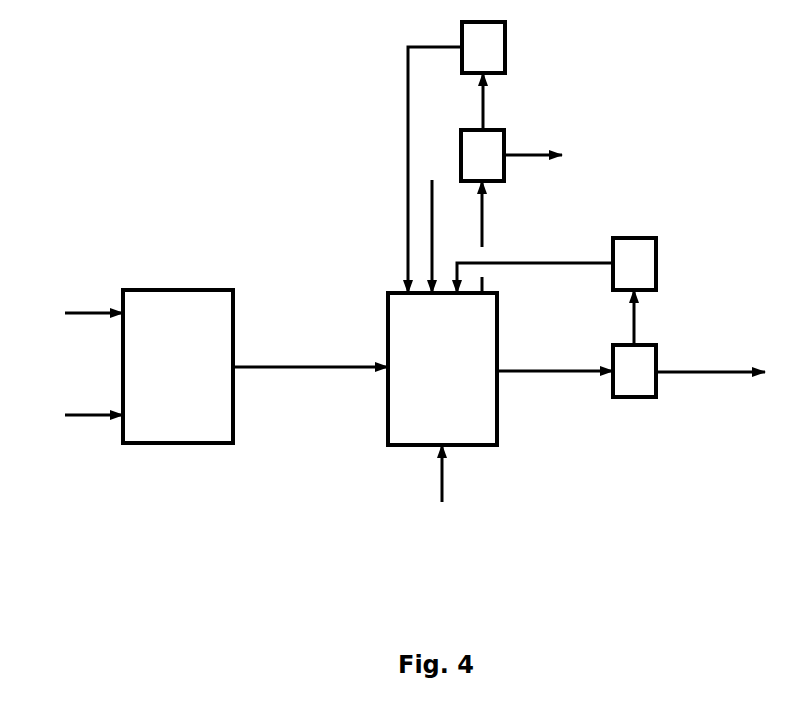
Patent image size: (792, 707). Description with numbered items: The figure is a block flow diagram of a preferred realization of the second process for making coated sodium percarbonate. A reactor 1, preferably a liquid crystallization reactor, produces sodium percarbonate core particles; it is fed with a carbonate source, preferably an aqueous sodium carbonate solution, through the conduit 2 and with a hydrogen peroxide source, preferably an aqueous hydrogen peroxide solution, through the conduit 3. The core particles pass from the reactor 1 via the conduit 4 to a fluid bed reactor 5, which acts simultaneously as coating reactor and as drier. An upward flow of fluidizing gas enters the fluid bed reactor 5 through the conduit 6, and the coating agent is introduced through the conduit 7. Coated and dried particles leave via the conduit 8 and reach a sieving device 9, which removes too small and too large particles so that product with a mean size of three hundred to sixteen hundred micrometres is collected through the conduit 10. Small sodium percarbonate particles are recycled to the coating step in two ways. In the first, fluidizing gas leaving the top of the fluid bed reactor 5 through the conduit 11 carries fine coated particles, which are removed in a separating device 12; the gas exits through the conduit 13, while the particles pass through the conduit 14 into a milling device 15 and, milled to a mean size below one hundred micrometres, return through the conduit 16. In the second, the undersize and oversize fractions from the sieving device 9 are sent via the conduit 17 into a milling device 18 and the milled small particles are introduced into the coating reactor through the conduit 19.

The reactor 1 is at (178, 366).
The conduit 2 is at (78, 313).
The conduit 3 is at (78, 415).
The conduit 4 is at (312, 367).
The fluid bed reactor 5 is at (442, 369).
The conduit 6 is at (442, 488).
The conduit 7 is at (432, 213).
The conduit 8 is at (554, 371).
The sieving device 9 is at (634, 371).
The conduit 10 is at (705, 372).
The conduit 11 is at (482, 232).
The separating device 12 is at (482, 155).
The conduit 13 is at (534, 155).
The conduit 14 is at (483, 108).
The milling device 15 is at (483, 47).
The conduit 16 is at (408, 243).
The conduit 17 is at (634, 323).
The milling device 18 is at (634, 264).
The conduit 19 is at (586, 263).